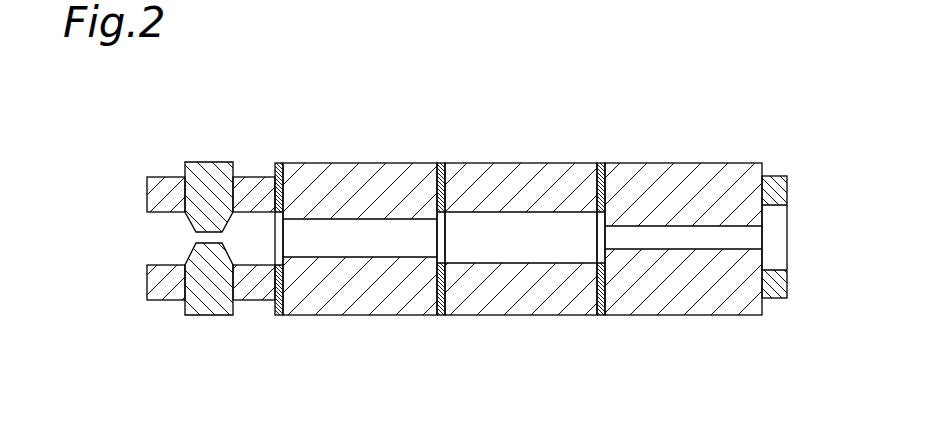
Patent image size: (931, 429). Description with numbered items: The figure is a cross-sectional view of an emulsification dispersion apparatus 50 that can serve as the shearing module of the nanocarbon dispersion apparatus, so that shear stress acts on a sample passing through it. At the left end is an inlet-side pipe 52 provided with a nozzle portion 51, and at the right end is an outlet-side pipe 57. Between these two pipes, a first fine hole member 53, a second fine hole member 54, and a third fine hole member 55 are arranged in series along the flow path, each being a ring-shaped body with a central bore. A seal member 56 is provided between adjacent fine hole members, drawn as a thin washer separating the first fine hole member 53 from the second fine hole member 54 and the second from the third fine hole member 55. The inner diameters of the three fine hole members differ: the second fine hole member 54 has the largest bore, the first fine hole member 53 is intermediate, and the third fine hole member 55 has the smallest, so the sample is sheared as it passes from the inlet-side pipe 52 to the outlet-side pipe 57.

The emulsification dispersion apparatus 50 is at (724, 90).
The nozzle portion 51 is at (207, 162).
The inlet-side pipe 52 is at (167, 177).
The first fine hole member 53 is at (362, 293).
The second fine hole member 54 is at (520, 292).
The third fine hole member 55 is at (680, 292).
The seal member 56 is at (442, 314).
The outlet-side pipe 57 is at (776, 300).